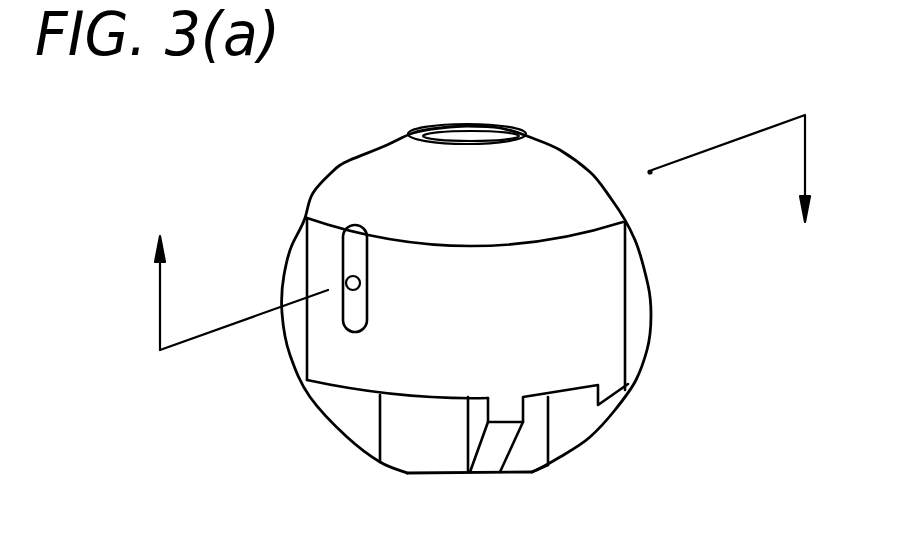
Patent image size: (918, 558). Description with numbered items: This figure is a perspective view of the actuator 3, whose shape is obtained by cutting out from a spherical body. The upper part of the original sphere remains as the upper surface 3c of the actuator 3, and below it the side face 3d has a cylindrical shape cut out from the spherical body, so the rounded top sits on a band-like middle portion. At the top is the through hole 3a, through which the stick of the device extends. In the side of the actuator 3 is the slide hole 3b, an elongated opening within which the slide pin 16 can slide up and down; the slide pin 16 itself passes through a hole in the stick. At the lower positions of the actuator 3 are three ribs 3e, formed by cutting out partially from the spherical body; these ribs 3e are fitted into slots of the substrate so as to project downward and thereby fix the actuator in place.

The actuator 3 is at (605, 124).
The through hole 3a is at (463, 138).
The slide hole 3b is at (353, 245).
The upper surface 3c is at (567, 198).
The side face 3d is at (594, 322).
The ribs 3e is at (403, 447).
The slide pin 16 is at (352, 292).